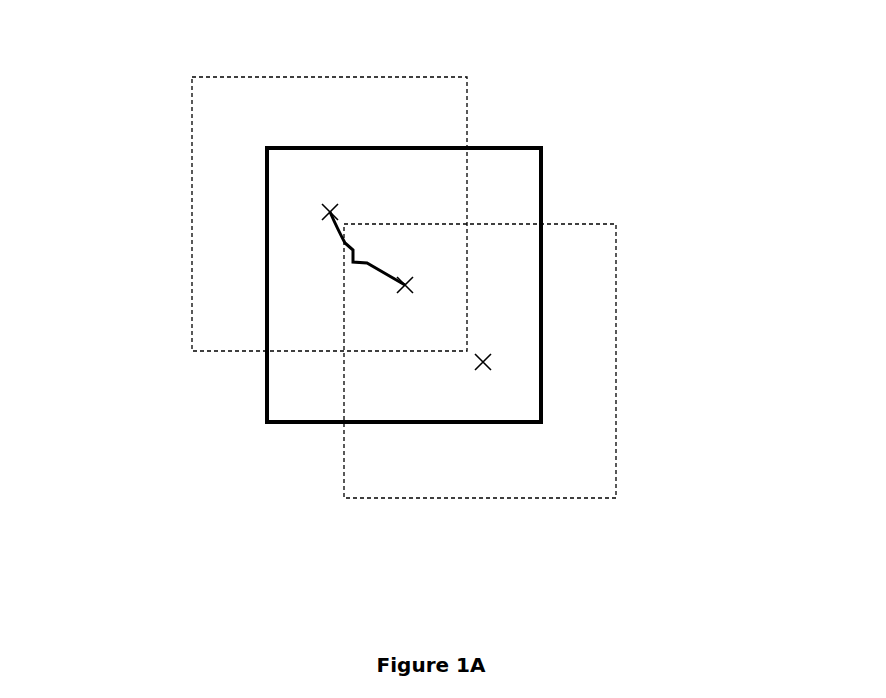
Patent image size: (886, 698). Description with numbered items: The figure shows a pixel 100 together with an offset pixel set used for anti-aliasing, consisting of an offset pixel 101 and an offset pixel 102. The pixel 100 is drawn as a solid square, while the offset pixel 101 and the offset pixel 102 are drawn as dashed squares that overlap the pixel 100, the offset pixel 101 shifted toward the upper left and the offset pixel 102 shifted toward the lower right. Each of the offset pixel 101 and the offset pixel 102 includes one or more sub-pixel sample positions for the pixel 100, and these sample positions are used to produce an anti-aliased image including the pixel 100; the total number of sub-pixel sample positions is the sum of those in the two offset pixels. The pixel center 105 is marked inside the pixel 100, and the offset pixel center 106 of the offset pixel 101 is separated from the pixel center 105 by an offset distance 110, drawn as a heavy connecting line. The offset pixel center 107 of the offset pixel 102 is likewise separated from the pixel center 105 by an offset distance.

The pixel 100 is at (267, 233).
The offset pixel 101 is at (192, 103).
The offset pixel 102 is at (616, 330).
The pixel center 105 is at (408, 283).
The offset pixel center 106 is at (332, 210).
The offset pixel center 107 is at (487, 366).
The offset distance 110 is at (350, 265).